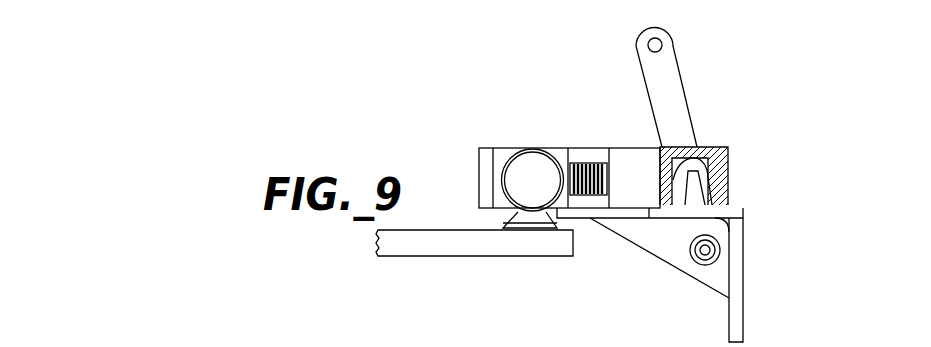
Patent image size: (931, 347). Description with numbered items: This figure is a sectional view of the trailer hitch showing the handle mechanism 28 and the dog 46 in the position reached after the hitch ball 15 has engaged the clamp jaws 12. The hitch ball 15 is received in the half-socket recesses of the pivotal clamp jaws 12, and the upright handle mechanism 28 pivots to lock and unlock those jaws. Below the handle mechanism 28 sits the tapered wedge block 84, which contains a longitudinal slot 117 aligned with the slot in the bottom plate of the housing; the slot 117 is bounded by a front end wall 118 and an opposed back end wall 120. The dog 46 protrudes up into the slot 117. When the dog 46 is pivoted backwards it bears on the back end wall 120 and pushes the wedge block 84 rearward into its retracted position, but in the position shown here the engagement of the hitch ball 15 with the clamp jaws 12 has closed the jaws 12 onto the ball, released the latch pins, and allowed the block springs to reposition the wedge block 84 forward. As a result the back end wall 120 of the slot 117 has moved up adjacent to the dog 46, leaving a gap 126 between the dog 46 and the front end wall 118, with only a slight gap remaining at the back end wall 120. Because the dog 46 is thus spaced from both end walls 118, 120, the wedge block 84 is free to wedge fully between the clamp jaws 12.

The handle mechanism 28 is at (727, 95).
The clamp jaws 12 is at (559, 152).
The hitch ball 15 is at (537, 172).
The front end wall 118 is at (674, 165).
The longitudinal slot 117 is at (683, 170).
The wedge block 84 is at (728, 178).
The back end wall 120 is at (712, 201).
The gap 126 is at (694, 207).
The dog 46 is at (678, 189).